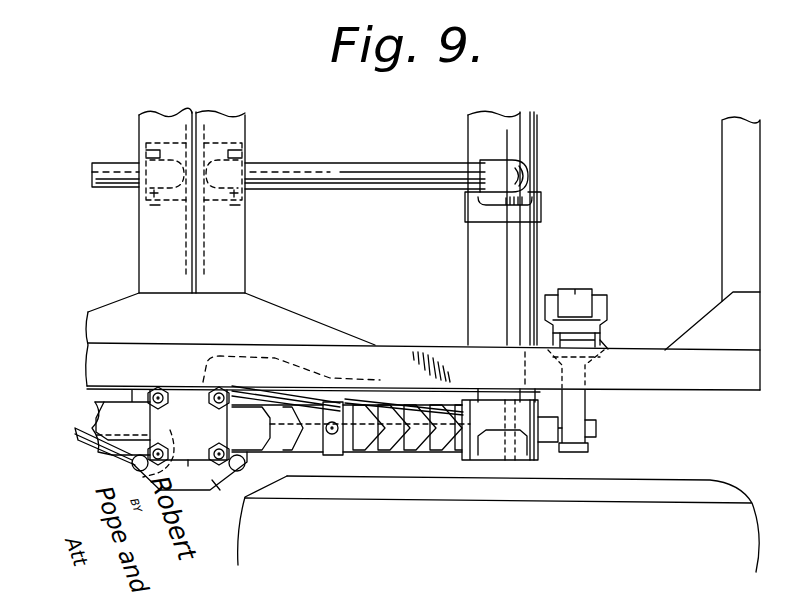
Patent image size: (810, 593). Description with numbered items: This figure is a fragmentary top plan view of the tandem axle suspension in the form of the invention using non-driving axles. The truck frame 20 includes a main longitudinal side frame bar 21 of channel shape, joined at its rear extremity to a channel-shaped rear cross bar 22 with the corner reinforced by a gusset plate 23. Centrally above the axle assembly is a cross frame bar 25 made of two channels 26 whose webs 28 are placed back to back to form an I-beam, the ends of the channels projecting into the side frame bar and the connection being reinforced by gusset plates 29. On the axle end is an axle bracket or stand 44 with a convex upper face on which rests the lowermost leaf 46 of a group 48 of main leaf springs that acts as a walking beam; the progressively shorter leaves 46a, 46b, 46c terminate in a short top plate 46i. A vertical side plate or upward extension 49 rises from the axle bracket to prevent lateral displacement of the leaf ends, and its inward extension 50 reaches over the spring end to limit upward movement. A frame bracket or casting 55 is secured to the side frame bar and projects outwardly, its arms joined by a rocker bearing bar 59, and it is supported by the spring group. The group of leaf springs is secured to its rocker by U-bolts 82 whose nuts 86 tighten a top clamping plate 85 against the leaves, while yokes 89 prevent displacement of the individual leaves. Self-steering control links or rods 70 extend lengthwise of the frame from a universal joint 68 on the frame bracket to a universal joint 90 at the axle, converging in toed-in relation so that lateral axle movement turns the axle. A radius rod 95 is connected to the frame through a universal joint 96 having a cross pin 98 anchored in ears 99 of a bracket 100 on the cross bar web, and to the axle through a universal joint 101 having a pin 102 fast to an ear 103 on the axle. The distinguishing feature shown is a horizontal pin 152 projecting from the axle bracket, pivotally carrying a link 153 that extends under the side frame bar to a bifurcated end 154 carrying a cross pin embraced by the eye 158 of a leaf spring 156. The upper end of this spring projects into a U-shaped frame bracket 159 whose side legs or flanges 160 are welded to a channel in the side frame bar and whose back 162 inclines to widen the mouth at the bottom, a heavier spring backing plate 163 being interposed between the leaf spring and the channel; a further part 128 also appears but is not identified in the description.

The frame 20 is at (768, 391).
The main longitudinal side frame bars 21 is at (682, 386).
The rear cross bar 22 is at (760, 174).
The gusset plates 23 is at (755, 297).
The cross frame bar 25 is at (182, 112).
The channels 26 is at (139, 256).
The webs 28 is at (185, 252).
The gusset plates 29 is at (108, 315).
The axle bracket or stand 44 is at (547, 473).
The lowermost leaf 46 is at (520, 462).
The leaf 46a is at (458, 456).
The leaf 46b is at (437, 456).
The leaf 46c is at (415, 456).
The top plate 46i is at (277, 428).
The group of main leaf springs 48 is at (388, 466).
The vertical side plate or upward extension 49 is at (510, 462).
The inward extension 50 is at (486, 462).
The frame bracket or casting 55 is at (194, 500).
The rocker bearing bar 59 is at (222, 492).
The universal joint 68 is at (248, 368).
The self-steering control links or rods 70 is at (80, 452).
The U-bolts 82 is at (159, 388).
The top clamping plate 85 is at (192, 462).
The nuts 86 is at (215, 445).
The yokes 89 is at (322, 452).
The universal joint 90 is at (485, 400).
The radius rods 95 is at (104, 165).
The universal joint 96 is at (246, 158).
The cross pin 98 is at (233, 143).
The ears 99 is at (244, 146).
The bracket 100 is at (184, 206).
The universal joint 101 is at (530, 166).
The pin 102 is at (496, 205).
The ear 103 is at (465, 210).
The drum 128 is at (750, 548).
The horizontal pin 152 is at (597, 428).
The link 153 is at (588, 398).
The bifurcated end 154 is at (597, 336).
The leaf spring 156 is at (605, 317).
The eye 158 is at (575, 289).
The U-shaped frame bracket 159 is at (608, 349).
The side legs or flanges 160 is at (544, 353).
The back 162 is at (600, 305).
The spring backing plate 163 is at (579, 365).